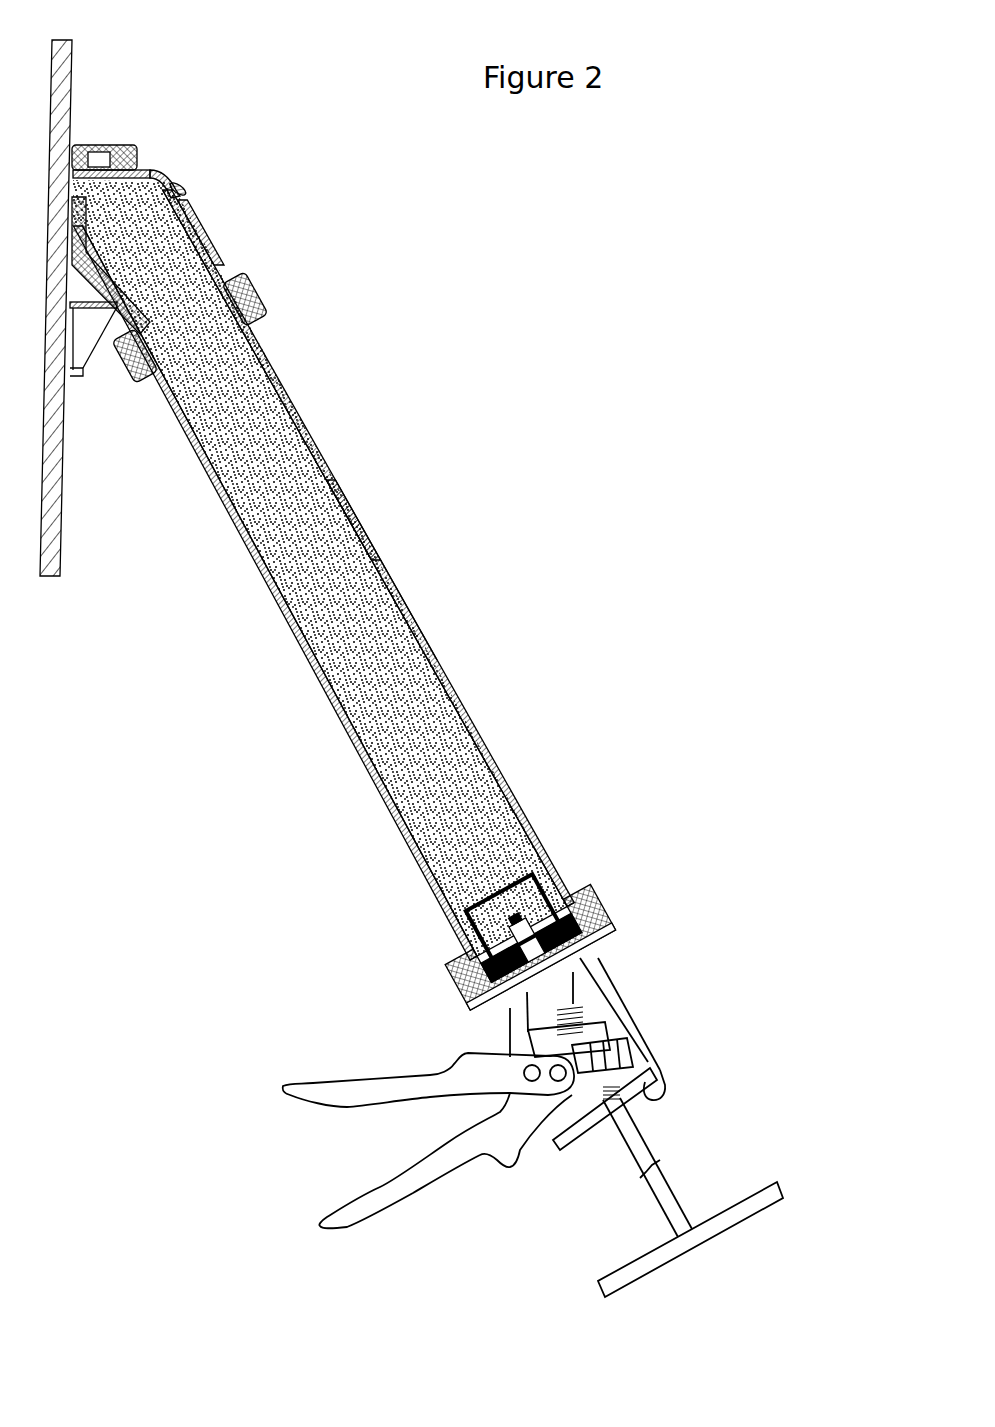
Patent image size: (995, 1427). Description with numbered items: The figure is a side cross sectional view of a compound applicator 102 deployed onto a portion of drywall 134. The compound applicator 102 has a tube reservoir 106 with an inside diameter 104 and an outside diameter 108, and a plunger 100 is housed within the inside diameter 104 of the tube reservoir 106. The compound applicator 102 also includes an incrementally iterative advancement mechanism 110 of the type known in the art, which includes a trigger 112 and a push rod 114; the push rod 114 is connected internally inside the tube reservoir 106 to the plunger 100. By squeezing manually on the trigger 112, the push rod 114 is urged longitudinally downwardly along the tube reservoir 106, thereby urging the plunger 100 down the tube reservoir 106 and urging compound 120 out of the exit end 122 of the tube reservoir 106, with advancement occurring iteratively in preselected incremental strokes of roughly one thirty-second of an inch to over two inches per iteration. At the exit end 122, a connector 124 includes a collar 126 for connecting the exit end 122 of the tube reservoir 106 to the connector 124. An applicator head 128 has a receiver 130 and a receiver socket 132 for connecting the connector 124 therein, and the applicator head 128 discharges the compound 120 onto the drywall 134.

The plunger 100 is at (482, 913).
The compound applicator 102 is at (587, 185).
The inside diameter 104 is at (366, 556).
The tube reservoir 106 is at (357, 520).
The outside diameter 108 is at (400, 600).
The incrementally iterative advancement mechanism 110 is at (650, 918).
The trigger 112 is at (367, 1093).
The push rod 114 is at (643, 1147).
The compound 120 is at (73, 62).
The exit end 122 is at (190, 343).
The connector 124 is at (200, 250).
The collar 126 is at (250, 296).
The applicator head 128 is at (103, 147).
The receiver 130 is at (163, 177).
The receiver socket 132 is at (175, 185).
The drywall 134 is at (57, 550).